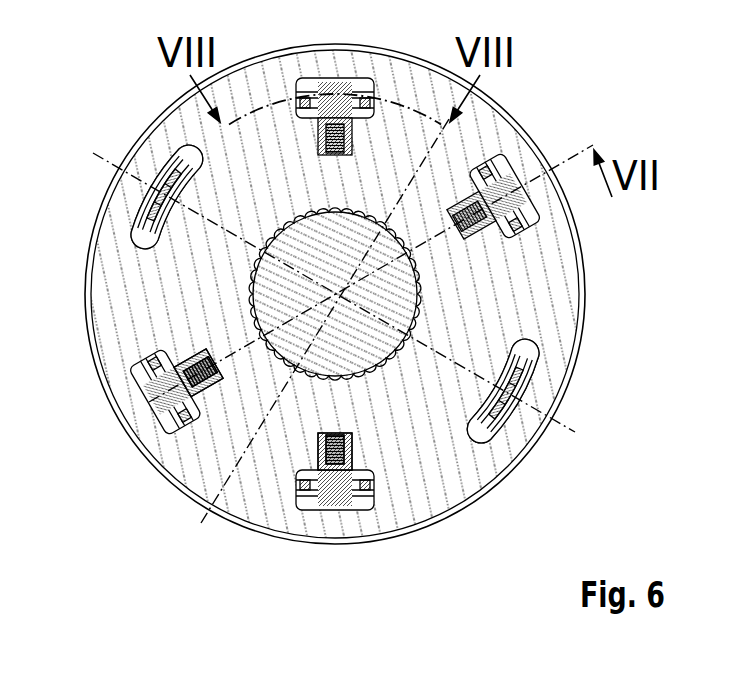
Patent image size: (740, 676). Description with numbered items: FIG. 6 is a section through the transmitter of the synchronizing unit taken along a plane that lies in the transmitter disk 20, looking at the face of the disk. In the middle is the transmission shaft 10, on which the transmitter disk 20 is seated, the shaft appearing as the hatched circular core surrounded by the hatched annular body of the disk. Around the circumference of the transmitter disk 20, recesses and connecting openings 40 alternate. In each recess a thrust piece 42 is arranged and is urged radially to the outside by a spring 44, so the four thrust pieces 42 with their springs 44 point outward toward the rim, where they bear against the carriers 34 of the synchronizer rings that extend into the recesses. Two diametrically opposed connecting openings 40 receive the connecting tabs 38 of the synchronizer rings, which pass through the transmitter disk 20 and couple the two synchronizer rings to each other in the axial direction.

The transmission shaft 10 is at (254, 283).
The transmitter disk 20 is at (540, 287).
The carrier 34 is at (330, 488).
The connecting tab 38 is at (155, 178).
The connecting opening 40 is at (180, 147).
The thrust piece 42 is at (223, 296).
The spring 44 is at (212, 392).